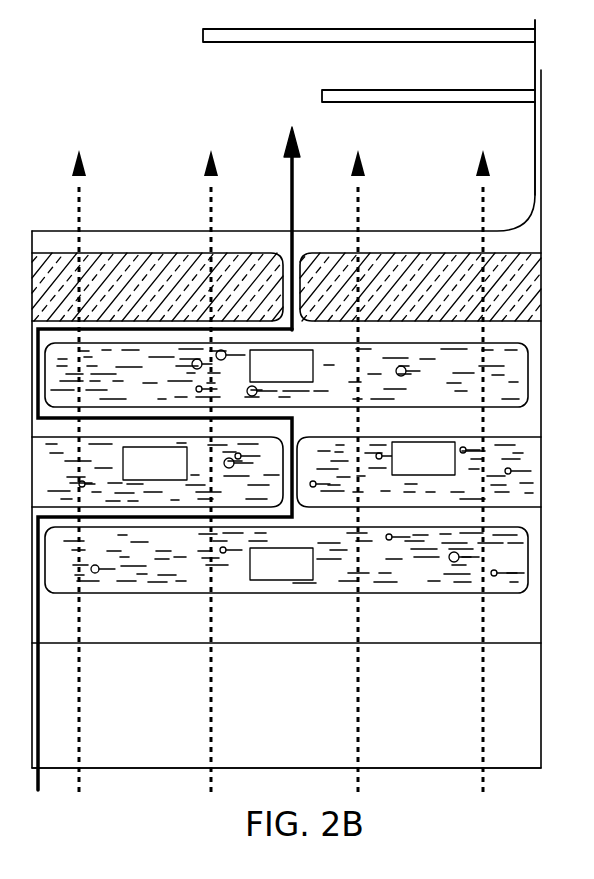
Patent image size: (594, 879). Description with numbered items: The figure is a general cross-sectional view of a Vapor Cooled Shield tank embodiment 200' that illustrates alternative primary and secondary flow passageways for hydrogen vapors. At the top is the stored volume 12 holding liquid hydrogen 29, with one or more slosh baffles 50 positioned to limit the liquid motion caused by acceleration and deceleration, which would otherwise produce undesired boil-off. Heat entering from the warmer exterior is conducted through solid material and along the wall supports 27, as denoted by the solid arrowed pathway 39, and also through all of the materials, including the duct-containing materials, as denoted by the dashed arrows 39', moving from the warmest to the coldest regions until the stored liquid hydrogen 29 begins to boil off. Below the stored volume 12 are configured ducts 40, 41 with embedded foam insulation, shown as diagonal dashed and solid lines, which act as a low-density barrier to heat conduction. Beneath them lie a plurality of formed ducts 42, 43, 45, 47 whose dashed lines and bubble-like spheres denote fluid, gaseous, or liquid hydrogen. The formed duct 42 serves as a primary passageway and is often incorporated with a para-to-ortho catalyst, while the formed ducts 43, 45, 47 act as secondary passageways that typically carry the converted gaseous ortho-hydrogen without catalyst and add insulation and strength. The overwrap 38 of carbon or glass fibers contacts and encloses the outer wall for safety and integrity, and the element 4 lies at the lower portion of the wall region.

The vapor cooled shield tank embodiment 200' is at (286, 394).
The stored volume 12 is at (297, 89).
The slosh baffle 50 is at (460, 42).
The liquid hydrogen 29 is at (288, 129).
The heat conduction pathway along wall supports 39 is at (262, 235).
The heat conduction pathways through materials 39' is at (275, 448).
The foam-insulated duct 40 is at (122, 253).
The foam-insulated duct 41 is at (378, 253).
The wall support 27 is at (298, 252).
The formed duct 42 is at (269, 378).
The formed duct 43 is at (142, 476).
The formed duct 45 is at (410, 471).
The formed duct 47 is at (269, 576).
The base plate 4 is at (96, 648).
The overwrap 38 is at (313, 716).